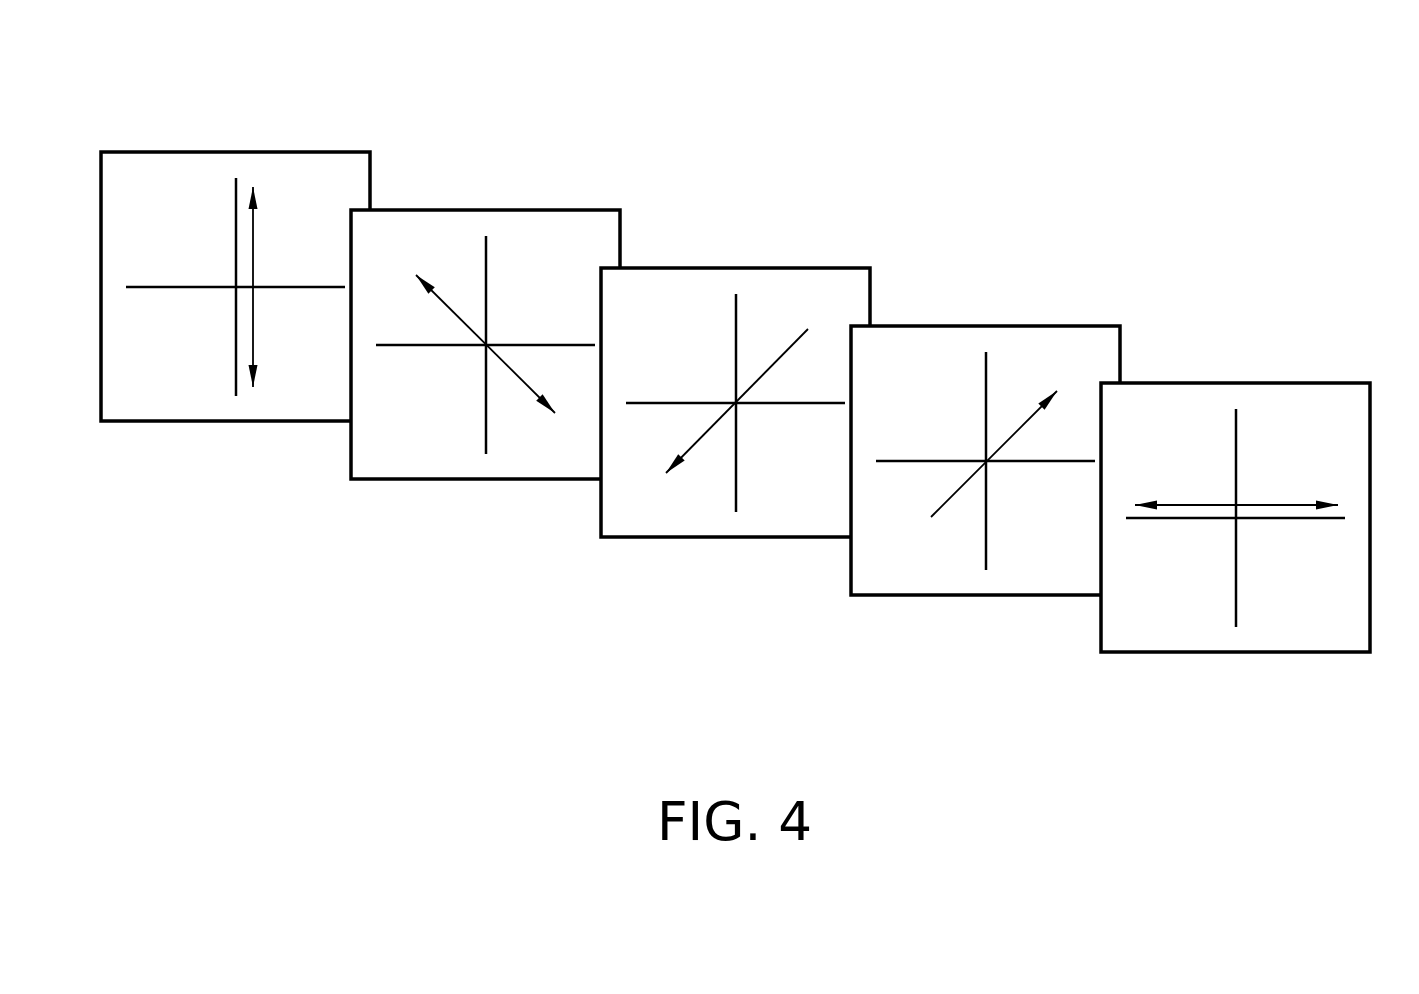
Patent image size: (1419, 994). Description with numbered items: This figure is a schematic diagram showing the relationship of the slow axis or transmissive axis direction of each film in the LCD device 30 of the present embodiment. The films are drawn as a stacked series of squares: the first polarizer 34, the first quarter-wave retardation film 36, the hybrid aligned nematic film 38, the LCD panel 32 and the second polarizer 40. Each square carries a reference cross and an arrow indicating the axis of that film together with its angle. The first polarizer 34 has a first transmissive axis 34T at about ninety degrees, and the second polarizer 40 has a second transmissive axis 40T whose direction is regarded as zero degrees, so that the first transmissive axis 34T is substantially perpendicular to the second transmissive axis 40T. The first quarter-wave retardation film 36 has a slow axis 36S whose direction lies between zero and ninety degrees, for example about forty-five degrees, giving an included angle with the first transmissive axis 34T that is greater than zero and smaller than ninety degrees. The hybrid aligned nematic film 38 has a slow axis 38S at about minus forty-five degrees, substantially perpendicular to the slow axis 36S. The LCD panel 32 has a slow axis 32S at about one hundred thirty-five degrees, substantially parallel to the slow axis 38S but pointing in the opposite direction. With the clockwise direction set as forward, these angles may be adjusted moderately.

The LCD device 30 is at (751, 343).
The LCD panel 32 is at (998, 431).
The first polarizer 34 is at (248, 257).
The first quarter-wave retardation film 36 is at (498, 315).
The hybrid aligned nematic film 38 is at (748, 373).
The second polarizer 40 is at (1248, 488).
The first transmissive axis 34T is at (289, 287).
The slow axis 36S is at (485, 344).
The slow axis 38S is at (737, 401).
The slow axis 32S is at (984, 454).
The second transmissive axis 40T is at (1236, 484).